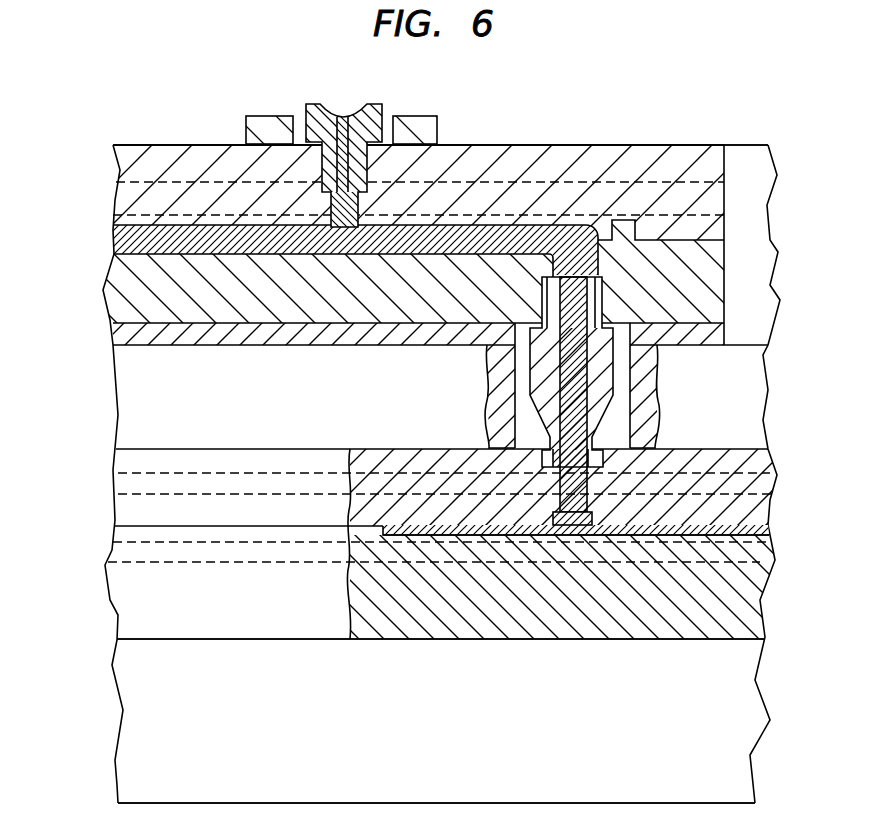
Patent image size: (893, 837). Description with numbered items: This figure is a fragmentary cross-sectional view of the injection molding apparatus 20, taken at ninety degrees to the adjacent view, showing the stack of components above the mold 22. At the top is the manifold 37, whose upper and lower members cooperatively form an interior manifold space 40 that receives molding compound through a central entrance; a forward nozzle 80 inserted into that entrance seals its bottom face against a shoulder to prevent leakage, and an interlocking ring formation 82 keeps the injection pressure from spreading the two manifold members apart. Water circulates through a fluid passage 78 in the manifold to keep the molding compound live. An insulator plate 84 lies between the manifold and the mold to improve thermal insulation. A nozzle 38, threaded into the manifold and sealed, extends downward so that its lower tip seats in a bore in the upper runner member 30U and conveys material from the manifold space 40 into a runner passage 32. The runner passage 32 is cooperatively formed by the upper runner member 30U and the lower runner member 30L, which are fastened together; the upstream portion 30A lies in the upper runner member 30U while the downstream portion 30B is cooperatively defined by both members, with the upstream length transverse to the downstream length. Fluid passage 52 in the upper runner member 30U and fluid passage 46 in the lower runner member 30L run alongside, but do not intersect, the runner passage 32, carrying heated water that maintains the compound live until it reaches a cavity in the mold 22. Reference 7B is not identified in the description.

The injection molding apparatus 20 is at (695, 67).
The manifold 37 is at (537, 137).
The upper substrate layer 7B is at (120, 203).
The interior manifold space 40 is at (490, 226).
The forward nozzle 80 is at (383, 106).
The fluid passage 78 is at (582, 178).
The interlocking ring formation 82 is at (633, 219).
The insulator plate 84 is at (120, 333).
The nozzle 38 is at (540, 378).
The upstream portion 30A is at (587, 505).
The upper runner member 30U is at (122, 464).
The fluid passage 52 is at (120, 490).
The fluid passage 46 is at (120, 556).
The lower runner member 30L is at (120, 610).
The runner passage 32 is at (485, 536).
The downstream portion 30B is at (591, 536).
The mold 22 is at (118, 788).